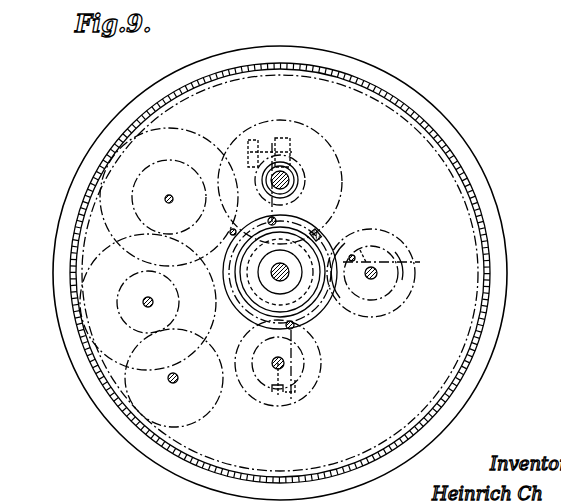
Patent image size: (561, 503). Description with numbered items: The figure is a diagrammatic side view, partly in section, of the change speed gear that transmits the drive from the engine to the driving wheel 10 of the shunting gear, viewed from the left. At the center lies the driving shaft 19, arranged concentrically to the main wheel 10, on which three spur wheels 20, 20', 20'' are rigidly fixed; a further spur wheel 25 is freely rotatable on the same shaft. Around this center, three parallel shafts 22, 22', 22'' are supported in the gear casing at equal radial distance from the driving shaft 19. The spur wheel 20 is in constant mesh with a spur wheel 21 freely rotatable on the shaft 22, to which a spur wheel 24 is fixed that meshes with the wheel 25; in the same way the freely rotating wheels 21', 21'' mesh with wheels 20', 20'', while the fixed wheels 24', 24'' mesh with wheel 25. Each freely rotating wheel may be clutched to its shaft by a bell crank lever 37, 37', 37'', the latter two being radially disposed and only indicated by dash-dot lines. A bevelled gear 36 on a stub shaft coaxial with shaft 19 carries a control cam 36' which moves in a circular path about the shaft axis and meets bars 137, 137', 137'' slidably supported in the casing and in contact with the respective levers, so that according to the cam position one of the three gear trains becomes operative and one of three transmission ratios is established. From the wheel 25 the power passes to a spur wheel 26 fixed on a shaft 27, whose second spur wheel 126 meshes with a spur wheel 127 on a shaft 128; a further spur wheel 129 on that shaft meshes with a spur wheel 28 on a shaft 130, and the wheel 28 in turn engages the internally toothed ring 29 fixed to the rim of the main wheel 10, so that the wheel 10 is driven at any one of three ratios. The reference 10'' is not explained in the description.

The driving wheel 10 is at (287, 273).
The case inner ring 10'' is at (308, 273).
The internally toothed ring 29 is at (455, 163).
The driving shaft 19 is at (282, 278).
The spur wheel 20 is at (280, 274).
The spur wheel 20' is at (271, 272).
The spur wheel 20'' is at (273, 283).
The bevelled gear 36 is at (283, 278).
The control cam 36' is at (342, 220).
The spur wheel 21 is at (292, 182).
The shaft 22 is at (298, 169).
The spur wheel 24 is at (295, 180).
The bell crank lever 37 is at (289, 181).
The bar 137 is at (214, 235).
The spur wheel 21' is at (374, 265).
The shaft 22' is at (389, 281).
The spur wheel 24' is at (395, 266).
The spur wheel 25 is at (349, 261).
The bar 137' is at (374, 300).
The bell crank lever 37' is at (387, 224).
The spur wheel 21'' is at (288, 363).
The shaft 22'' is at (304, 363).
The spur wheel 24'' is at (275, 402).
The bell crank lever 37'' is at (328, 365).
The bar 137'' is at (256, 366).
The spur wheel 26 is at (170, 128).
The spur wheel 126 is at (165, 163).
The shaft 27 is at (169, 199).
The spur wheel 127 is at (86, 270).
The spur wheel 129 is at (177, 305).
The shaft 128 is at (148, 302).
The spur wheel 28 is at (206, 412).
The shaft 130 is at (173, 378).